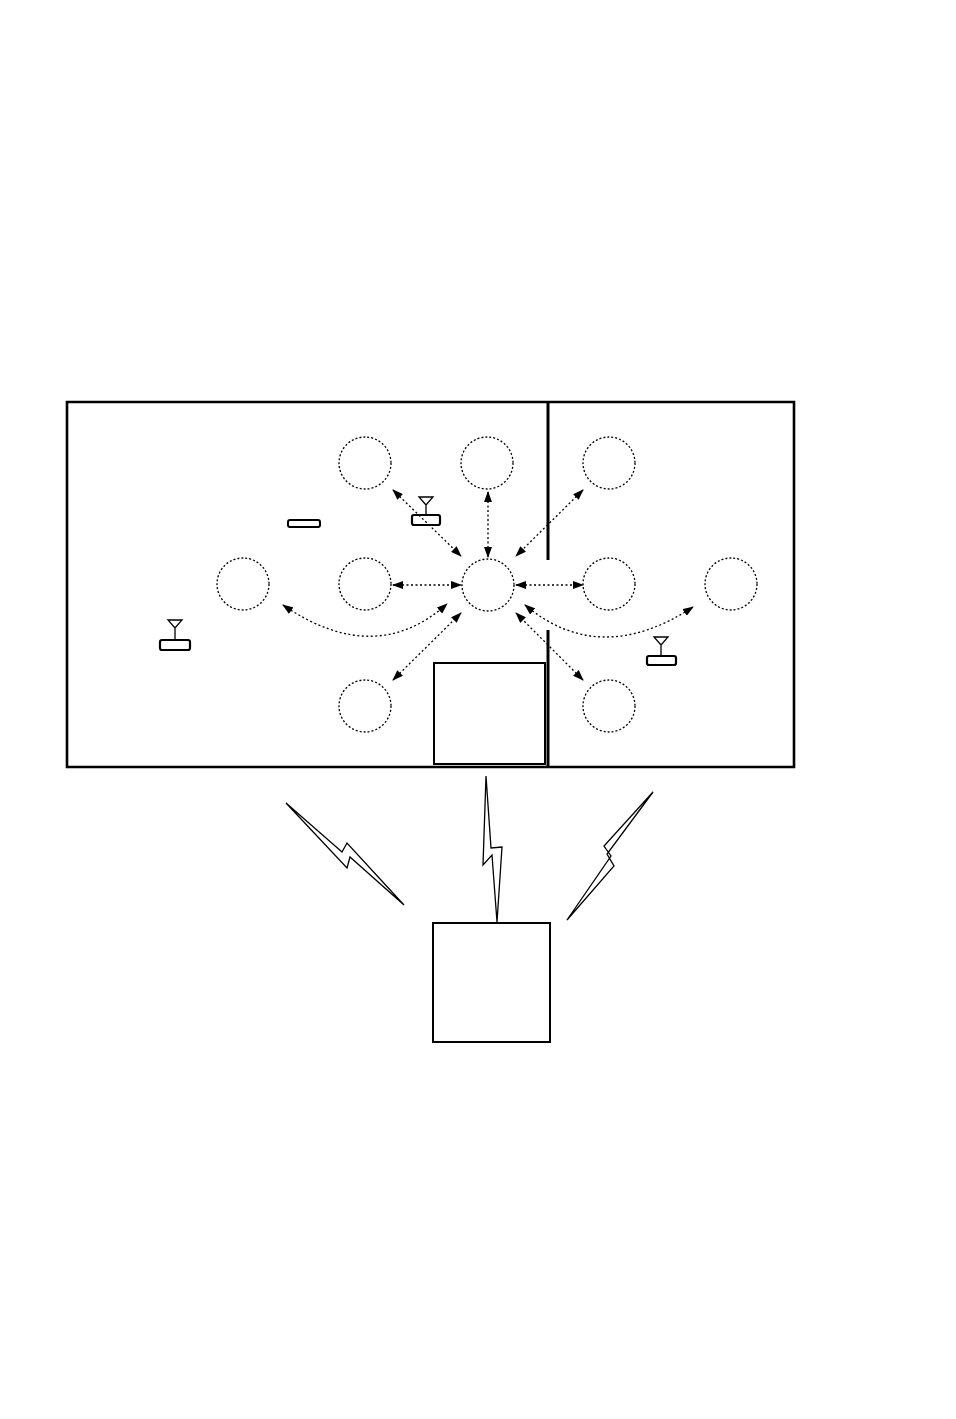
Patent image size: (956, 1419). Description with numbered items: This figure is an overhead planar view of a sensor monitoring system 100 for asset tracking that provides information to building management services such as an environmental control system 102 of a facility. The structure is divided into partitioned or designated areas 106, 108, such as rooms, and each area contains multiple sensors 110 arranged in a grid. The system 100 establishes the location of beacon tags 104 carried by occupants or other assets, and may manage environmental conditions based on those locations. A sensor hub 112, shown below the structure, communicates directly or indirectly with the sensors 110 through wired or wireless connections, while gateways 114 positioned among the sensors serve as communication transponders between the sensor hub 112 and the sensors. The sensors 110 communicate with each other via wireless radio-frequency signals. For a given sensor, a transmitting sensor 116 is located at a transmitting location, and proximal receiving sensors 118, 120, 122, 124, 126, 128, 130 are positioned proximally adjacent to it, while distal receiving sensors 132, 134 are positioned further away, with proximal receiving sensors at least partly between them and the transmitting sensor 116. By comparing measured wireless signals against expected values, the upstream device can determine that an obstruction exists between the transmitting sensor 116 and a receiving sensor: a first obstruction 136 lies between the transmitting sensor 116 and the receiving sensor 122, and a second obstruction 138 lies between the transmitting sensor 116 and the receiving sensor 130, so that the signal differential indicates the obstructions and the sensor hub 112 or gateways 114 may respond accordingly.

The sensor monitoring system 100 is at (122, 72).
The environmental control system 102 is at (476, 740).
The beacon tag 104 is at (302, 520).
The area 106 is at (201, 429).
The area 108 is at (688, 429).
The sensor 110 is at (426, 584).
The sensor hub 112 is at (477, 1015).
The gateway 114 is at (414, 527).
The transmitting sensor 116 is at (476, 557).
The proximal receiving sensor 118 is at (347, 438).
The proximal receiving sensor 120 is at (488, 437).
The proximal receiving sensor 122 is at (609, 437).
The proximal receiving sensor 124 is at (348, 564).
The proximal receiving sensor 126 is at (612, 559).
The proximal receiving sensor 128 is at (365, 733).
The proximal receiving sensor 130 is at (610, 733).
The distal receiving sensor 132 is at (226, 564).
The distal receiving sensor 134 is at (731, 558).
The first obstruction 136 is at (550, 445).
The second obstruction 138 is at (549, 634).